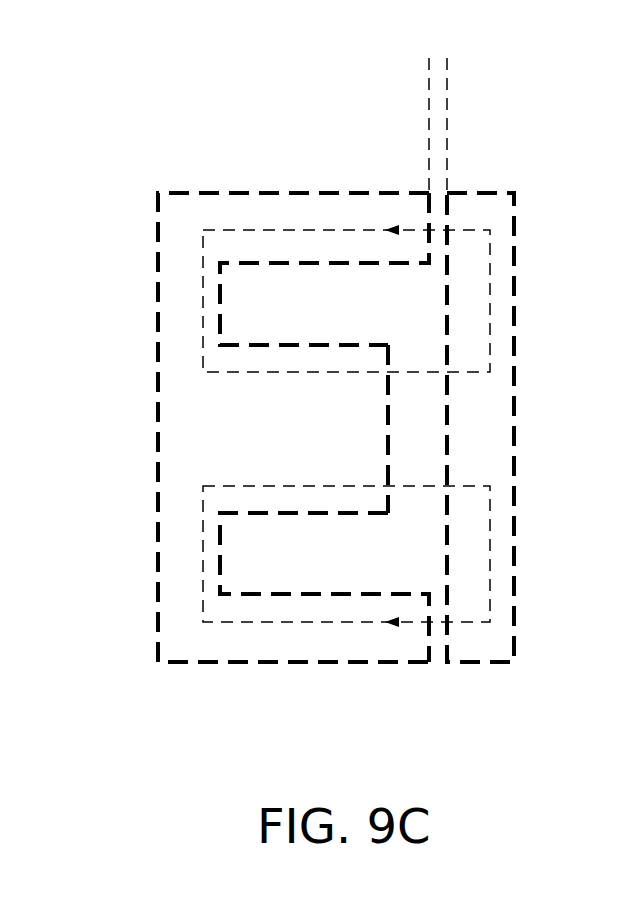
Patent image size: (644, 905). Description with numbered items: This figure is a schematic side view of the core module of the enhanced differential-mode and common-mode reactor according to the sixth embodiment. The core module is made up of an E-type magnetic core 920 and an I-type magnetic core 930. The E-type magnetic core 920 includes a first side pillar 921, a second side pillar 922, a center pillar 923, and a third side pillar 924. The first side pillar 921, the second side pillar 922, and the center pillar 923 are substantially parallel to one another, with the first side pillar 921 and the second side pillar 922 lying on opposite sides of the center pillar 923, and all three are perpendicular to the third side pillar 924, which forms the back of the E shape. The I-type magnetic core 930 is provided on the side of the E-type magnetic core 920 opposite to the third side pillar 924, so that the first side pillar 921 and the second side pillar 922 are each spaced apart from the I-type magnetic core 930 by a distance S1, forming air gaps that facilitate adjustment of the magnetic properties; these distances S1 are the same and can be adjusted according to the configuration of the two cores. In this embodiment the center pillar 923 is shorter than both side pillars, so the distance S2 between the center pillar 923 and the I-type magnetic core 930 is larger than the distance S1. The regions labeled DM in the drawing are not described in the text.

The E-type magnetic core 920 is at (242, 421).
The first side pillar 921 is at (294, 222).
The second side pillar 922 is at (300, 648).
The center pillar 923 is at (318, 447).
The third side pillar 924 is at (178, 431).
The I-type magnetic core 930 is at (475, 193).
The dummy metal region DM is at (490, 302).
The distance S1 is at (490, 67).
The distance S2 is at (447, 353).